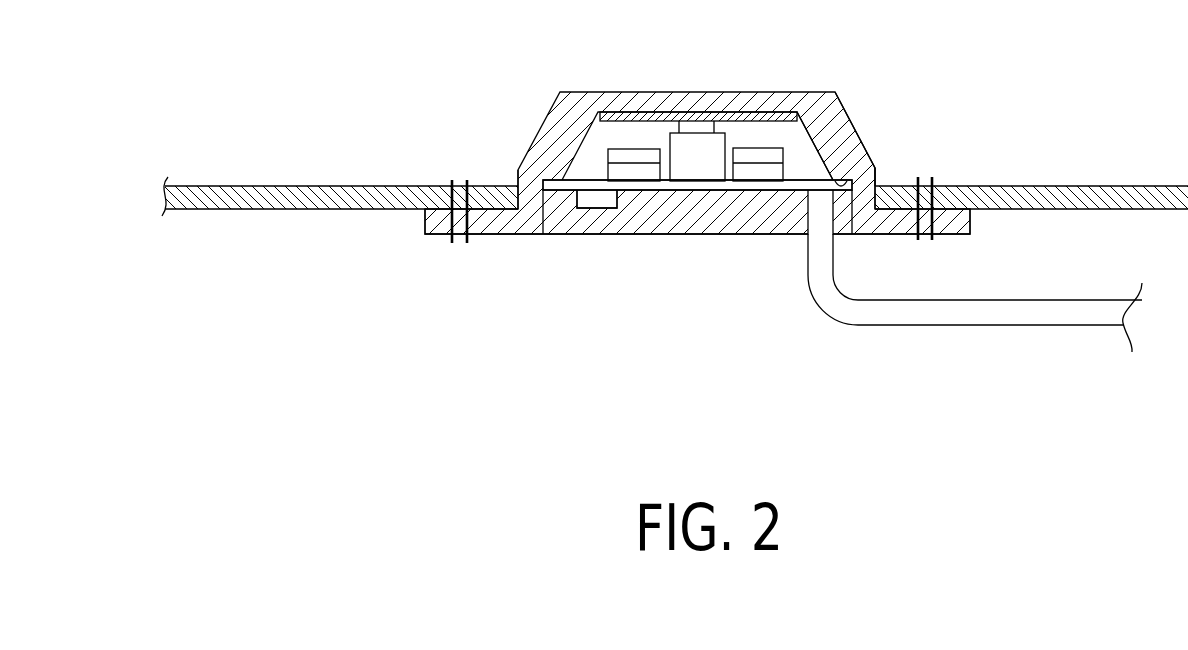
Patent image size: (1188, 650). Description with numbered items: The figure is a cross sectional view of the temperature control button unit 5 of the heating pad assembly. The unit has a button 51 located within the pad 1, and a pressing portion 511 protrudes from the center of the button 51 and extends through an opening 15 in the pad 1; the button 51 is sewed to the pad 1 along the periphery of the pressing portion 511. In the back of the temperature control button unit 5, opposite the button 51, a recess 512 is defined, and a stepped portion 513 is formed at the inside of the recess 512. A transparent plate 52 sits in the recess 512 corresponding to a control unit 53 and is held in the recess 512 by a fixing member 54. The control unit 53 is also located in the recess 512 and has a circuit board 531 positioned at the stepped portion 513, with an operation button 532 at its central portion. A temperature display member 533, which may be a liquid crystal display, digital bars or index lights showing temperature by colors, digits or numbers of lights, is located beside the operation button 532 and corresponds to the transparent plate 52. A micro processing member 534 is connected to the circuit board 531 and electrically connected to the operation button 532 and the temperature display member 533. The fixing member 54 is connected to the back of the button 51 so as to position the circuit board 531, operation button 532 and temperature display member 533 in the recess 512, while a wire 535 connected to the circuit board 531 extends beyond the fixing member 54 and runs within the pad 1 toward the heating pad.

The pad 1 is at (287, 187).
The opening 15 is at (521, 178).
The temperature control button unit 5 is at (783, 230).
The button 51 is at (490, 236).
The pressing portion 511 is at (700, 96).
The recess 512 is at (812, 146).
The stepped portion 513 is at (843, 178).
The transparent plate 52 is at (633, 112).
The control unit 53 is at (840, 283).
The circuit board 531 is at (737, 189).
The operation button 532 is at (698, 130).
The temperature display member 533 is at (763, 160).
The micro processing member 534 is at (602, 207).
The wire 535 is at (1028, 317).
The fixing member 54 is at (840, 235).